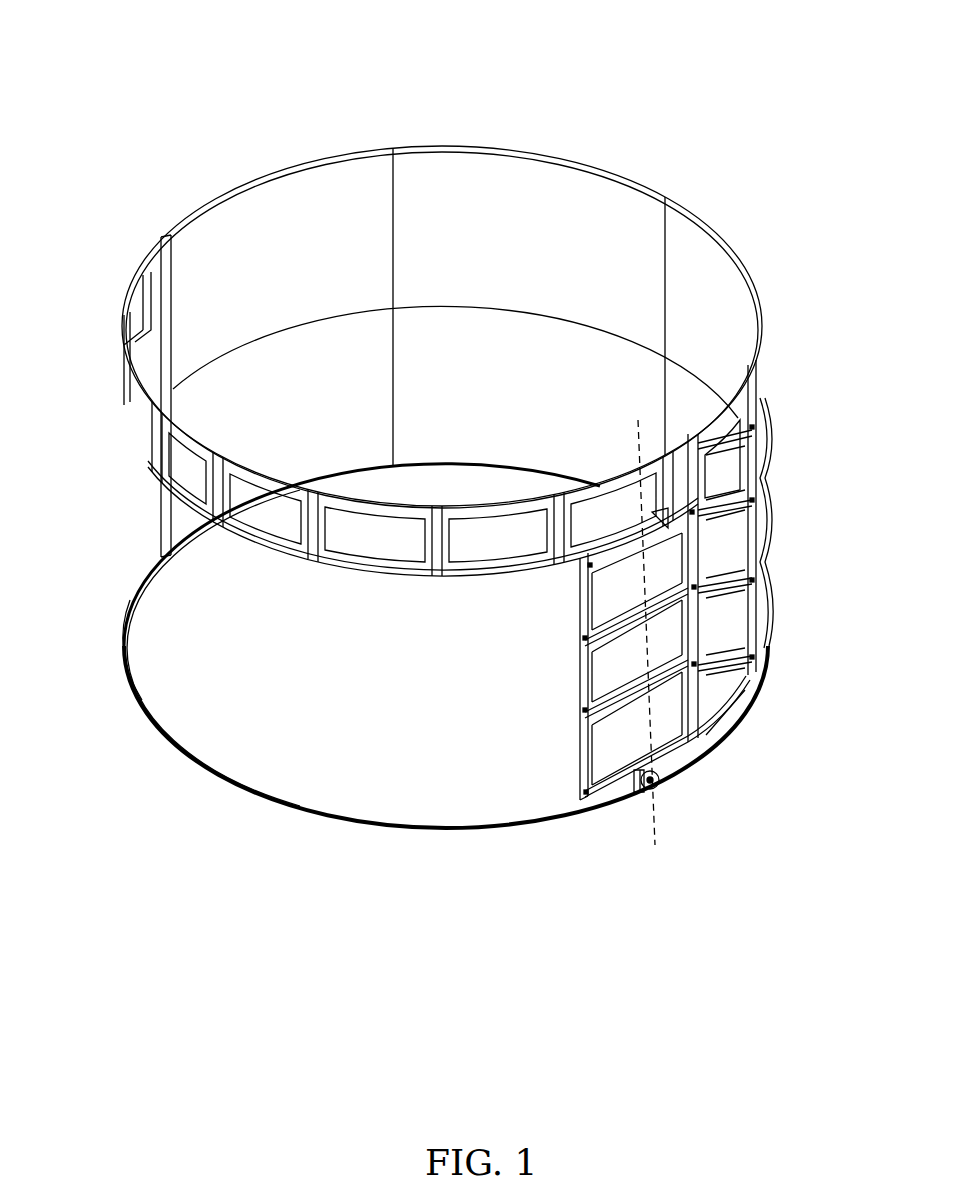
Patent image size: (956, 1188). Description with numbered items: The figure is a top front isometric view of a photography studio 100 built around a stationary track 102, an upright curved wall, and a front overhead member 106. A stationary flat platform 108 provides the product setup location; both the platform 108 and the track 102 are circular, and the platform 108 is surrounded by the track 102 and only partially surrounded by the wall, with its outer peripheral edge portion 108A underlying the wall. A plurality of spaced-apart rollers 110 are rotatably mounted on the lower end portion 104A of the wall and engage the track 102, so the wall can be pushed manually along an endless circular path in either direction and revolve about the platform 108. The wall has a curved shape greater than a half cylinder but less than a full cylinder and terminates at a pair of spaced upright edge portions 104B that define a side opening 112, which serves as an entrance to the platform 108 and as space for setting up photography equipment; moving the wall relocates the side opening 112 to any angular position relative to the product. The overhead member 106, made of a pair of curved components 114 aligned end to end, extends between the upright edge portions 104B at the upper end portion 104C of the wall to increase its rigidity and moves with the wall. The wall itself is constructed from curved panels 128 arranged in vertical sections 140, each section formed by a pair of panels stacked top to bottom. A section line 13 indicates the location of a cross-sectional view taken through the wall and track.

The photography studio 100 is at (143, 92).
The stationary track 102 is at (167, 742).
The lower end portion 104A is at (574, 768).
The upright edge portions 104B is at (165, 540).
The upper end portion 104C is at (176, 250).
The front overhead member 106 is at (254, 566).
The stationary flat platform 108 is at (400, 664).
The outer peripheral edge portion 108A is at (138, 698).
The rollers 110 is at (768, 590).
The side opening 112 is at (305, 700).
The curved components 114 is at (203, 430).
The curved panels 128 is at (697, 412).
The vertical sections 140 is at (257, 180).
The section line 13 is at (649, 433).